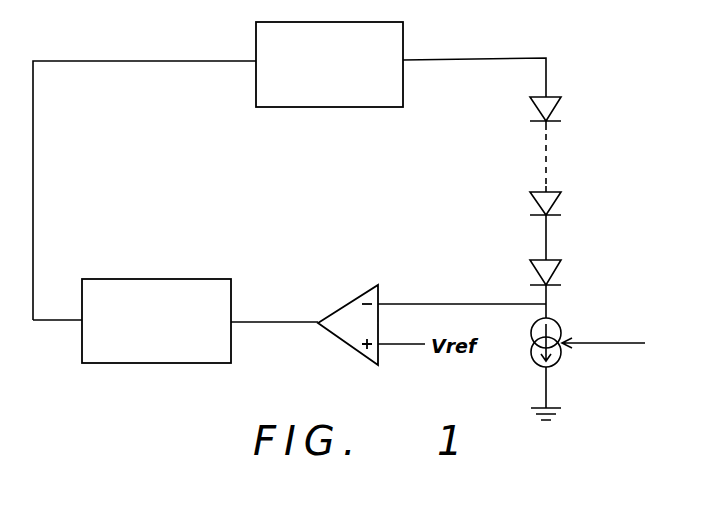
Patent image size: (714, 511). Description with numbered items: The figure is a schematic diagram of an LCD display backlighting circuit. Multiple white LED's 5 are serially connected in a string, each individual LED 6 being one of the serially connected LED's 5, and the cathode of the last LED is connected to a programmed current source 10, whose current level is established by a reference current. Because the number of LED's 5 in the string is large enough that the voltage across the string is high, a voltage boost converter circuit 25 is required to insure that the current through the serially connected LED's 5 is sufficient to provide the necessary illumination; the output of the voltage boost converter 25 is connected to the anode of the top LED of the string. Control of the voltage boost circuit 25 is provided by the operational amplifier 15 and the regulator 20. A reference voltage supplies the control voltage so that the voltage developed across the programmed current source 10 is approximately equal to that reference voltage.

The voltage boost converter circuit 25 is at (330, 22).
The regulator 20 is at (155, 279).
The operational amplifier 15 is at (358, 298).
The serially connected LED's 5 is at (553, 188).
The LED 6 is at (531, 98).
The programmed current source 10 is at (562, 364).